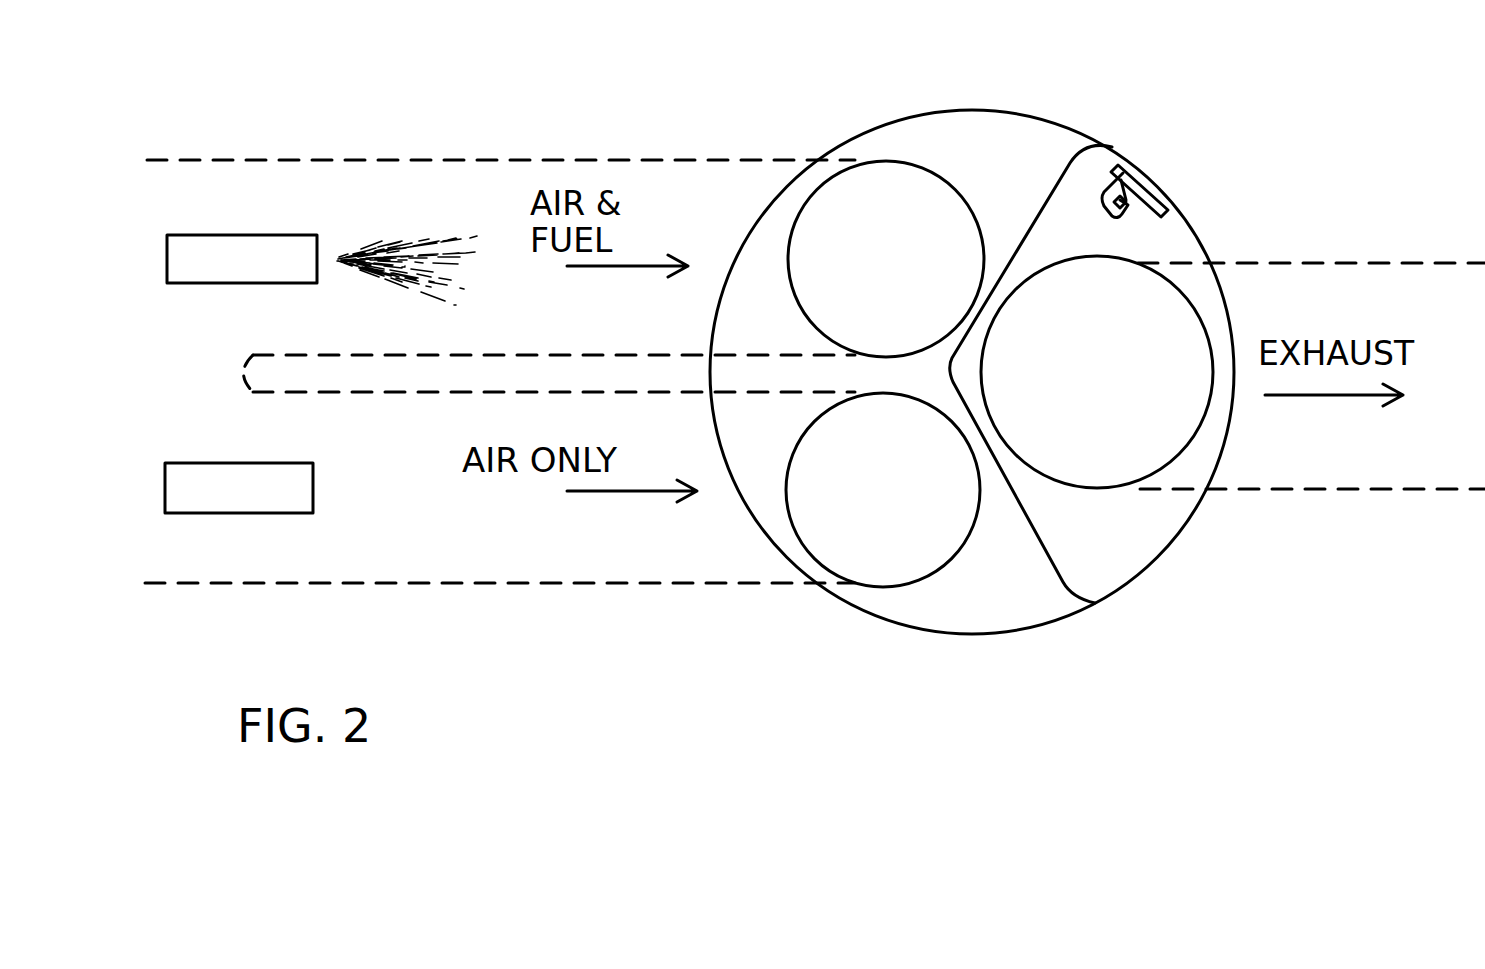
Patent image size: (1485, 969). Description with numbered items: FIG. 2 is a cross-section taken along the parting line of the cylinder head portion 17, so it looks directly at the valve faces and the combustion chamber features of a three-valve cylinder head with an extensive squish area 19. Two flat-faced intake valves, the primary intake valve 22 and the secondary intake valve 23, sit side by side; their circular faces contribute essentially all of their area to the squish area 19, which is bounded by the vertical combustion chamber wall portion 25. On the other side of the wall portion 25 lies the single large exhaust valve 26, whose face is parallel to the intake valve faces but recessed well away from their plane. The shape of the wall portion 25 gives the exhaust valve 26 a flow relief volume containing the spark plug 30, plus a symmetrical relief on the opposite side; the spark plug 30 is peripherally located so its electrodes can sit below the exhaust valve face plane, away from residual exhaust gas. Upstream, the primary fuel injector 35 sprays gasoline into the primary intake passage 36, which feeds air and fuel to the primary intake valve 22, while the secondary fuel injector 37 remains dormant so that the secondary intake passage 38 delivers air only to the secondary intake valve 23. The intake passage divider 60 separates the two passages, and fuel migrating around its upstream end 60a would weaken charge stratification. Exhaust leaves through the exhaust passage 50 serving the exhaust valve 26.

The head portion 17 is at (1197, 72).
The squish area 19 is at (1030, 213).
The primary intake valve 22 is at (947, 172).
The secondary intake valve 23 is at (960, 552).
The vertical combustion chamber wall portion 25 is at (1045, 537).
The exhaust valve 26 is at (1105, 488).
The spark plug 30 is at (1135, 205).
The primary fuel injector 35 is at (230, 235).
The primary intake passage 36 is at (487, 160).
The secondary fuel injector 37 is at (240, 463).
The secondary intake passage 38 is at (423, 588).
The exhaust passage 50 is at (1390, 263).
The intake passage divider 60 is at (517, 355).
The upstream end of the intake passage divider 60a is at (243, 362).